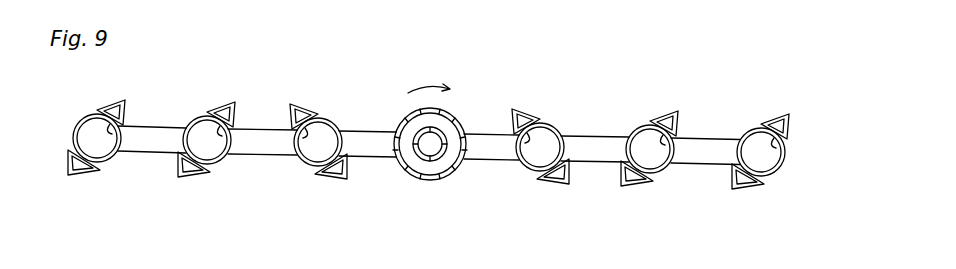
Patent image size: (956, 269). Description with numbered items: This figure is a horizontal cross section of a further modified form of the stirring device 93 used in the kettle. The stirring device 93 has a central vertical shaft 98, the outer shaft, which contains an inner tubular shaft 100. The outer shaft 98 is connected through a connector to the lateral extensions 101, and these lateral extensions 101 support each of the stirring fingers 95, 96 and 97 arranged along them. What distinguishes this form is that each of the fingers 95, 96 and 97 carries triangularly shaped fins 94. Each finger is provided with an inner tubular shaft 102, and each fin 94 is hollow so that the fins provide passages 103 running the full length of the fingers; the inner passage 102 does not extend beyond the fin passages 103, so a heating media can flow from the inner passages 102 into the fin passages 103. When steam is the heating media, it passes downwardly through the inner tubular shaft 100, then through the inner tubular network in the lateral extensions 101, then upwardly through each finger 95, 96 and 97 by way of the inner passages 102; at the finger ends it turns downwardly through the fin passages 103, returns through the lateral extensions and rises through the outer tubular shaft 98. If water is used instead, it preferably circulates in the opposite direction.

The stirring device 93 is at (600, 138).
The triangularly shaped fins 94 is at (112, 103).
The stirring finger 95 is at (72, 132).
The stirring finger 96 is at (200, 113).
The stirring finger 97 is at (307, 160).
The central vertical shaft 98 is at (428, 175).
The inner tubular shaft 100 is at (435, 158).
The lateral extensions 101 is at (378, 131).
The inner tubular shaft 102 is at (97, 155).
The fin passages 103 is at (120, 115).